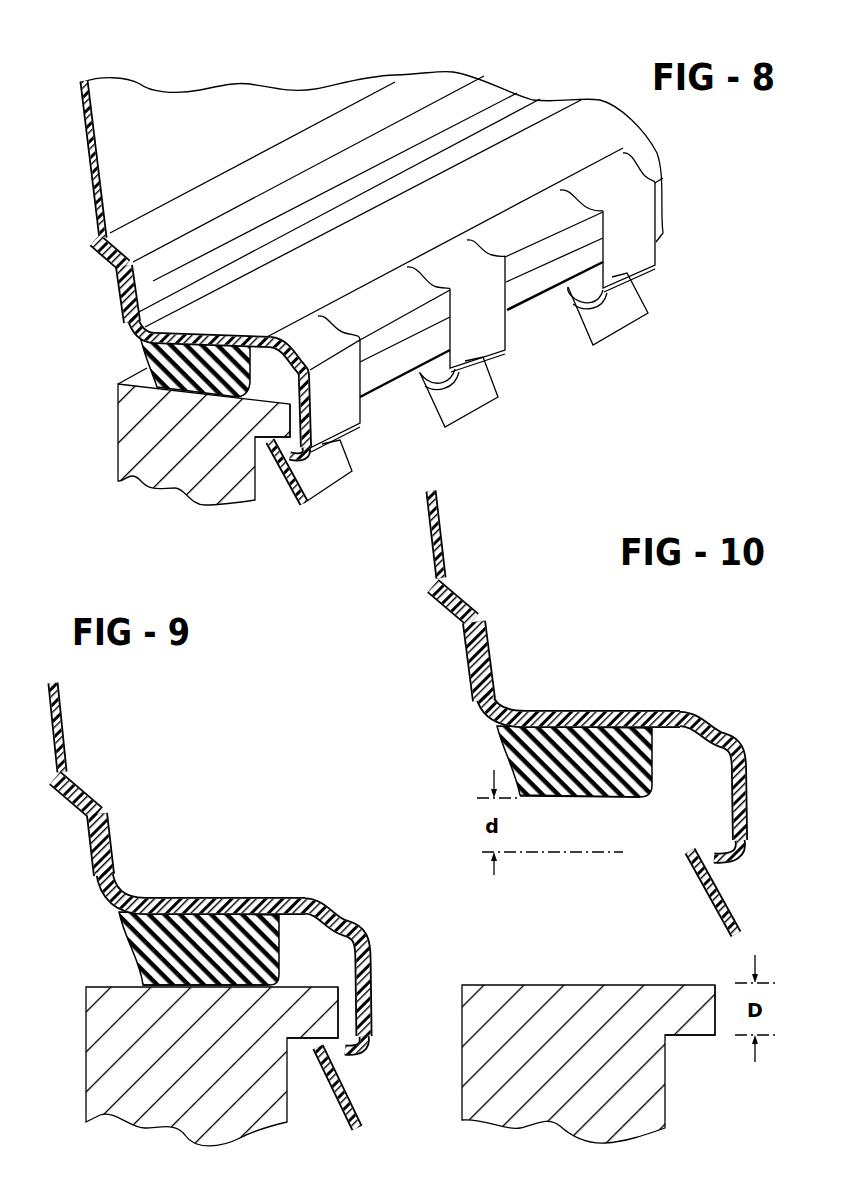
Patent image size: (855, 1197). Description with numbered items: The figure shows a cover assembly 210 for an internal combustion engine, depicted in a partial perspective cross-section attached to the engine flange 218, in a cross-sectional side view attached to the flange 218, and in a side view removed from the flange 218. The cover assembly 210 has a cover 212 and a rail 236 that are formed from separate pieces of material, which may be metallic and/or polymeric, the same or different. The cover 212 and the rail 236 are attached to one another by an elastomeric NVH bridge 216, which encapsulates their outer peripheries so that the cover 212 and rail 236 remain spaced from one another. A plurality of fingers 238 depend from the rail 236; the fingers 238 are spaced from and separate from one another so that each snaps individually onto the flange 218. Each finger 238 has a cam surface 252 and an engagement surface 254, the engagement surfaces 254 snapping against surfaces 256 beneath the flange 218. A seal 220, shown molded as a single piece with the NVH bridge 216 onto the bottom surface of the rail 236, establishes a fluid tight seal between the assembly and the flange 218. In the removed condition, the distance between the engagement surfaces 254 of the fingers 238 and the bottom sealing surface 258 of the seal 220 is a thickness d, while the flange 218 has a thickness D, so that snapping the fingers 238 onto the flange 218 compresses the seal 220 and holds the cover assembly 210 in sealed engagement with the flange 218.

In FIG. 8, the cover assembly 210 is at (470, 50).
In FIG. 9, the cover assembly 210 is at (207, 830).
In FIG. 10, the cover assembly 210 is at (585, 641).
In FIG. 8, the cover 212 is at (203, 103).
In FIG. 9, the cover 212 is at (63, 710).
In FIG. 10, the cover 212 is at (446, 515).
In FIG. 8, the NVH bridge 216 is at (93, 246).
In FIG. 9, the NVH bridge 216 is at (70, 812).
In FIG. 10, the NVH bridge 216 is at (450, 620).
In FIG. 8, the flange 218 is at (316, 408).
In FIG. 9, the flange 218 is at (377, 993).
In FIG. 10, the flange 218 is at (716, 1036).
In FIG. 8, the seal 220 is at (140, 362).
In FIG. 9, the seal 220 is at (140, 937).
In FIG. 10, the seal 220 is at (492, 748).
In FIG. 8, the rail 236 is at (585, 130).
In FIG. 9, the rail 236 is at (270, 898).
In FIG. 10, the rail 236 is at (650, 710).
In FIG. 8, the fingers 238 is at (352, 405).
In FIG. 9, the fingers 238 is at (366, 960).
In FIG. 10, the fingers 238 is at (748, 775).
In FIG. 8, the cam surfaces 252 is at (298, 500).
In FIG. 9, the cam surfaces 252 is at (330, 1098).
In FIG. 10, the cam surfaces 252 is at (712, 908).
In FIG. 9, the engagement surfaces 254 is at (372, 1036).
In FIG. 10, the engagement surfaces 254 is at (748, 843).
In FIG. 8, the surfaces beneath the flange 256 is at (258, 440).
In FIG. 9, the surfaces beneath the flange 256 is at (332, 1052).
In FIG. 10, the surfaces beneath the flange 256 is at (673, 1037).
In FIG. 9, the bottom sealing surface 258 is at (177, 988).
In FIG. 10, the bottom sealing surface 258 is at (560, 800).